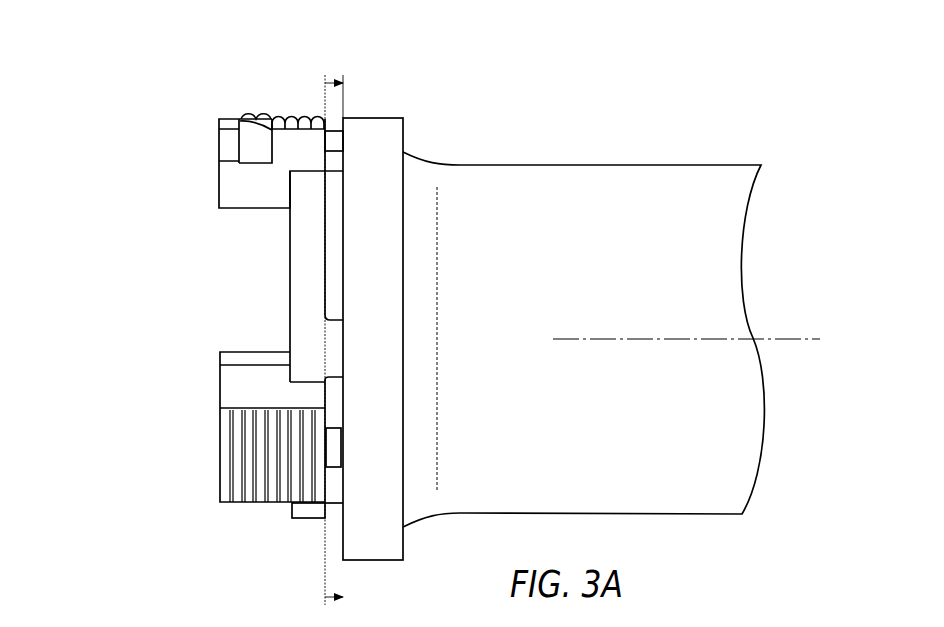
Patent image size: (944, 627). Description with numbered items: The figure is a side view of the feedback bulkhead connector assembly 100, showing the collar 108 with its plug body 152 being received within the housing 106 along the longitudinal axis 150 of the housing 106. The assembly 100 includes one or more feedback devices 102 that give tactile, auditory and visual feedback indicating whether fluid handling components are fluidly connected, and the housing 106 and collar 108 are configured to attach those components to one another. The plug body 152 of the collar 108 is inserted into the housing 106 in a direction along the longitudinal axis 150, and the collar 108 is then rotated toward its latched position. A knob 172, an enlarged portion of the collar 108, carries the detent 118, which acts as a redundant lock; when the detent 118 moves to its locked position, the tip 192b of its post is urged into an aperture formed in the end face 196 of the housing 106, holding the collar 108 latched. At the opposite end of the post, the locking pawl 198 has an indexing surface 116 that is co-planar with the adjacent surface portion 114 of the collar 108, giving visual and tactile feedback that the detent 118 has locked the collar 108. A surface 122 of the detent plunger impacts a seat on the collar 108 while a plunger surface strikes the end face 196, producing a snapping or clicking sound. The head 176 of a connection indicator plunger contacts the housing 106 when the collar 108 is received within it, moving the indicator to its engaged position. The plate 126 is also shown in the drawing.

The feedback bulkhead connector assembly 100 is at (147, 85).
The feedback device 102 is at (216, 122).
The housing 106 is at (686, 164).
The collar 108 is at (225, 108).
The adjacent surface portion 114 is at (219, 193).
The indexing surface 116 is at (219, 145).
The detent 118 is at (237, 117).
The surface of the detent plunger 122 is at (240, 142).
The plate 126 is at (412, 152).
The longitudinal axis 150 is at (779, 337).
The plug body 152 is at (333, 505).
The knob 172 is at (250, 503).
The head 176 is at (343, 450).
The tip 192b is at (332, 129).
The end face 196 is at (335, 548).
The locking pawl 198 is at (232, 117).